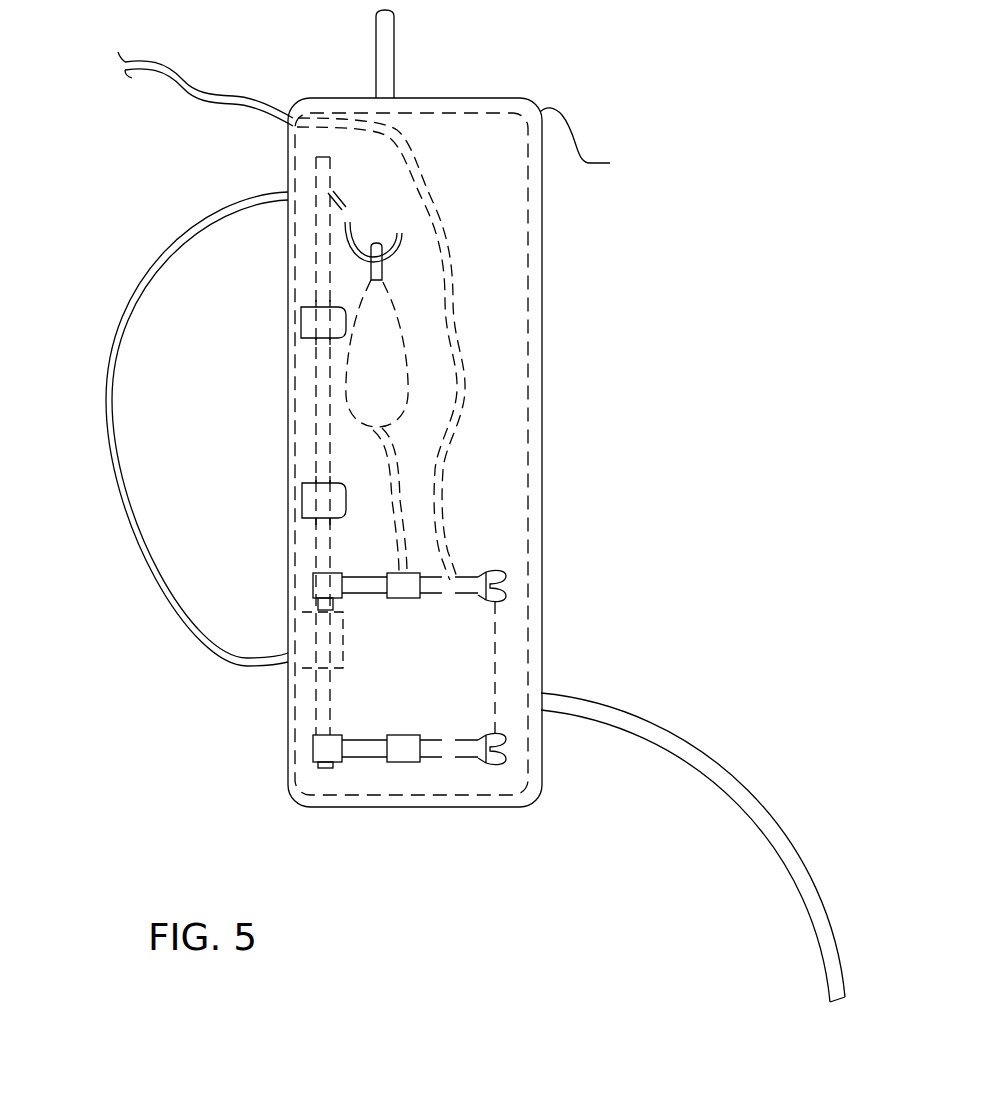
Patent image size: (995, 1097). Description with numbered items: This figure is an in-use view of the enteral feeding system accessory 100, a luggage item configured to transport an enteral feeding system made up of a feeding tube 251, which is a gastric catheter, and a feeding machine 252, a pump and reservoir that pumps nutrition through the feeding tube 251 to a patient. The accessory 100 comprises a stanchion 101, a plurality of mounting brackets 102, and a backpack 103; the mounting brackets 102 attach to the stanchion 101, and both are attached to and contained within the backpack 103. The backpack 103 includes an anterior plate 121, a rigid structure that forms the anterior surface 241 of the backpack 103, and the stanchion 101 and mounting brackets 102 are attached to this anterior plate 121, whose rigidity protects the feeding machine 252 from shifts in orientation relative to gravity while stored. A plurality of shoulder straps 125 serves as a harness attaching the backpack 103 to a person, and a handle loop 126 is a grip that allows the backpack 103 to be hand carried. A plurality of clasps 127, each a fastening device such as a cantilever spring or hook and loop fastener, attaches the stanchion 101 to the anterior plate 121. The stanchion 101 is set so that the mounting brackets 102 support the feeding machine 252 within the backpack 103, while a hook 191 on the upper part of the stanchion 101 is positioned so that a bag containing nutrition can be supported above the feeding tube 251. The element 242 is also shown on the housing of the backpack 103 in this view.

The enteral feeding system accessory 100 is at (672, 88).
The stanchion 101 is at (325, 425).
The plurality of mounting brackets 102 is at (473, 580).
The backpack 103 is at (601, 140).
The anterior plate 121 is at (293, 727).
The plurality of shoulder straps 125 is at (222, 662).
The handle loop 126 is at (390, 72).
The plurality of clasps 127 is at (318, 330).
The hook 191 is at (396, 255).
The anterior surface 241 is at (288, 568).
The second housing portion 242 is at (545, 355).
The feeding tube 251 is at (458, 352).
The feeding machine 252 is at (457, 658).